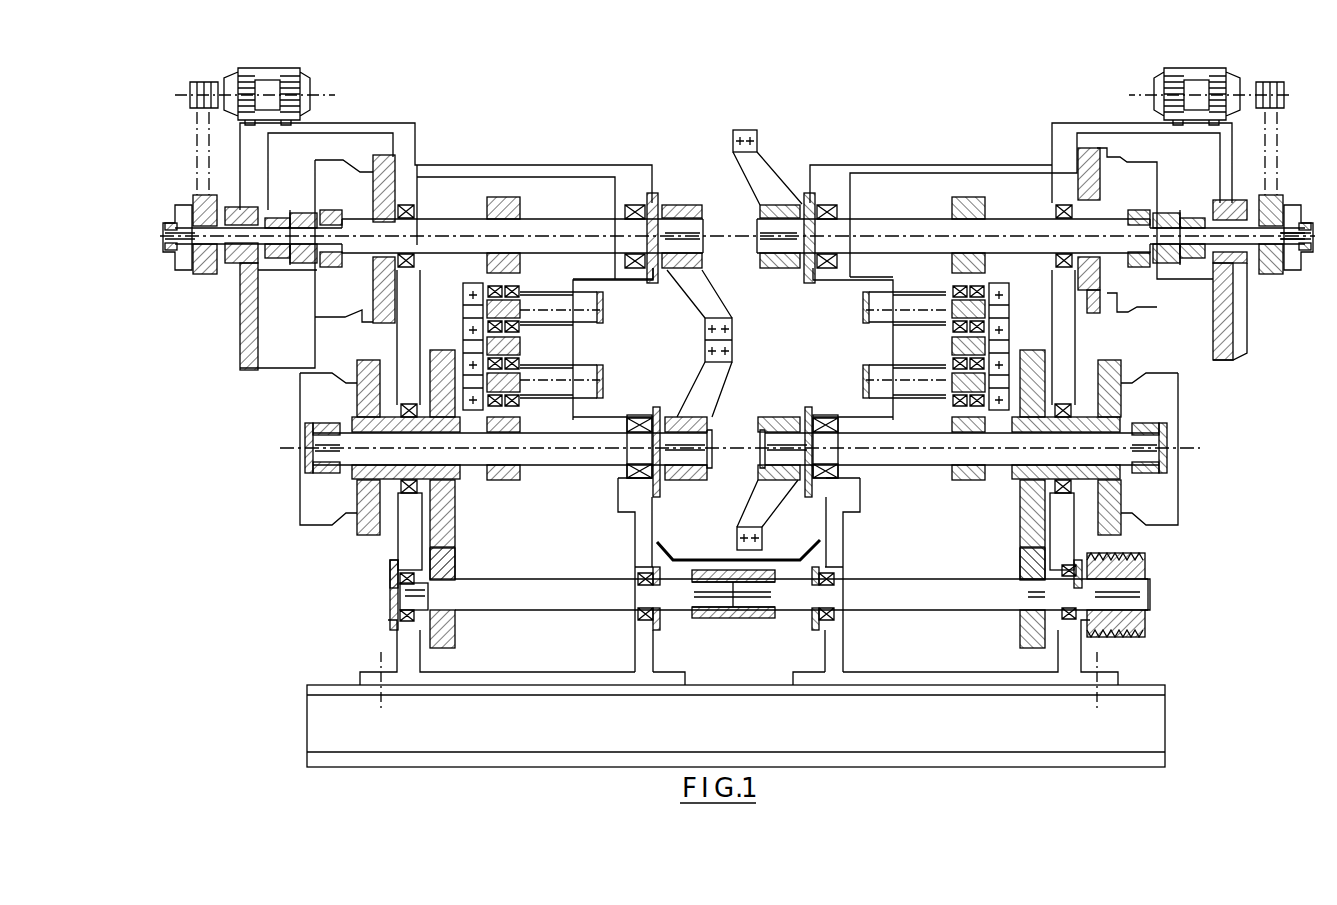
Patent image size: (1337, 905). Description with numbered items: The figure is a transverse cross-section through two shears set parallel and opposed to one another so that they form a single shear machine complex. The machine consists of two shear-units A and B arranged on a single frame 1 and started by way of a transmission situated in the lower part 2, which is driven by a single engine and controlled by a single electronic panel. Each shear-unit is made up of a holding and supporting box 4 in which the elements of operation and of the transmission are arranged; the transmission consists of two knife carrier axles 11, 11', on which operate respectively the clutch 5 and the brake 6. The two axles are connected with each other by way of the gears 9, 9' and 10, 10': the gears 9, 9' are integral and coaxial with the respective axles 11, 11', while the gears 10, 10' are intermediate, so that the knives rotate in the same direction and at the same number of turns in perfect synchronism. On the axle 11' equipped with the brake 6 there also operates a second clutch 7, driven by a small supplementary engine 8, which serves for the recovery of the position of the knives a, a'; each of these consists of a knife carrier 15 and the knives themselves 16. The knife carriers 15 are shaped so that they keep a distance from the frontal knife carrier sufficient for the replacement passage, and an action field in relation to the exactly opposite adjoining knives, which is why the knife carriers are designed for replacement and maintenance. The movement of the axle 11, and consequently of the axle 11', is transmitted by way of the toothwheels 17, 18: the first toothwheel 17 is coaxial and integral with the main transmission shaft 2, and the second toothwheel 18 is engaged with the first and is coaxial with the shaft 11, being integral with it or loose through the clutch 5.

The base 1 is at (1150, 726).
The main transmission shaft 2 is at (881, 588).
The holding and supporting box 4 is at (1068, 653).
The clutch 5 is at (1160, 487).
The brake 6 is at (1140, 285).
The second clutch 7 is at (1284, 200).
The small supplementary engine 8 is at (1168, 82).
The gear 9 is at (968, 475).
The gear 9' is at (974, 179).
The intermediate gear 10 is at (942, 363).
The intermediate gear 10' is at (941, 288).
The knife carrier axle 11 is at (963, 467).
The knife carrier axle 11' is at (1031, 169).
The knife carrier 15 is at (783, 415).
The knives 16 is at (736, 543).
The toothwheel 17 is at (1020, 619).
The toothwheel 18 is at (1025, 518).
The knife a is at (767, 515).
The knife a' is at (768, 153).
The shear-unit A is at (486, 159).
The shear-unit B is at (904, 159).